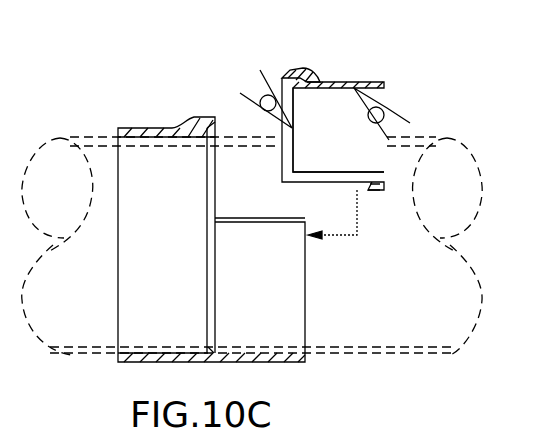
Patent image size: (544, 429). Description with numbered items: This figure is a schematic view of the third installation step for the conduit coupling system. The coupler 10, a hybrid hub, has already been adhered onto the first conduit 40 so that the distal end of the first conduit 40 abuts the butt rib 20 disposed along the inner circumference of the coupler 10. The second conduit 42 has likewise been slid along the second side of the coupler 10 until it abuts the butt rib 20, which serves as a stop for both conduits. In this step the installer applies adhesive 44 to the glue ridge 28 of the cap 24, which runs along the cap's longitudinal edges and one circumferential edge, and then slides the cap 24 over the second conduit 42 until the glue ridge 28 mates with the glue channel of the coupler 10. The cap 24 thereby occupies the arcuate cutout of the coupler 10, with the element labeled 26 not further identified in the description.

The coupler 10 is at (163, 133).
The butt rib 20 is at (208, 268).
The cap 24 is at (370, 82).
The inner member 26 is at (305, 153).
The glue ridge 28 is at (289, 72).
The first conduit 40 is at (67, 353).
The second conduit 42 is at (370, 353).
The adhesive 44 is at (233, 95).